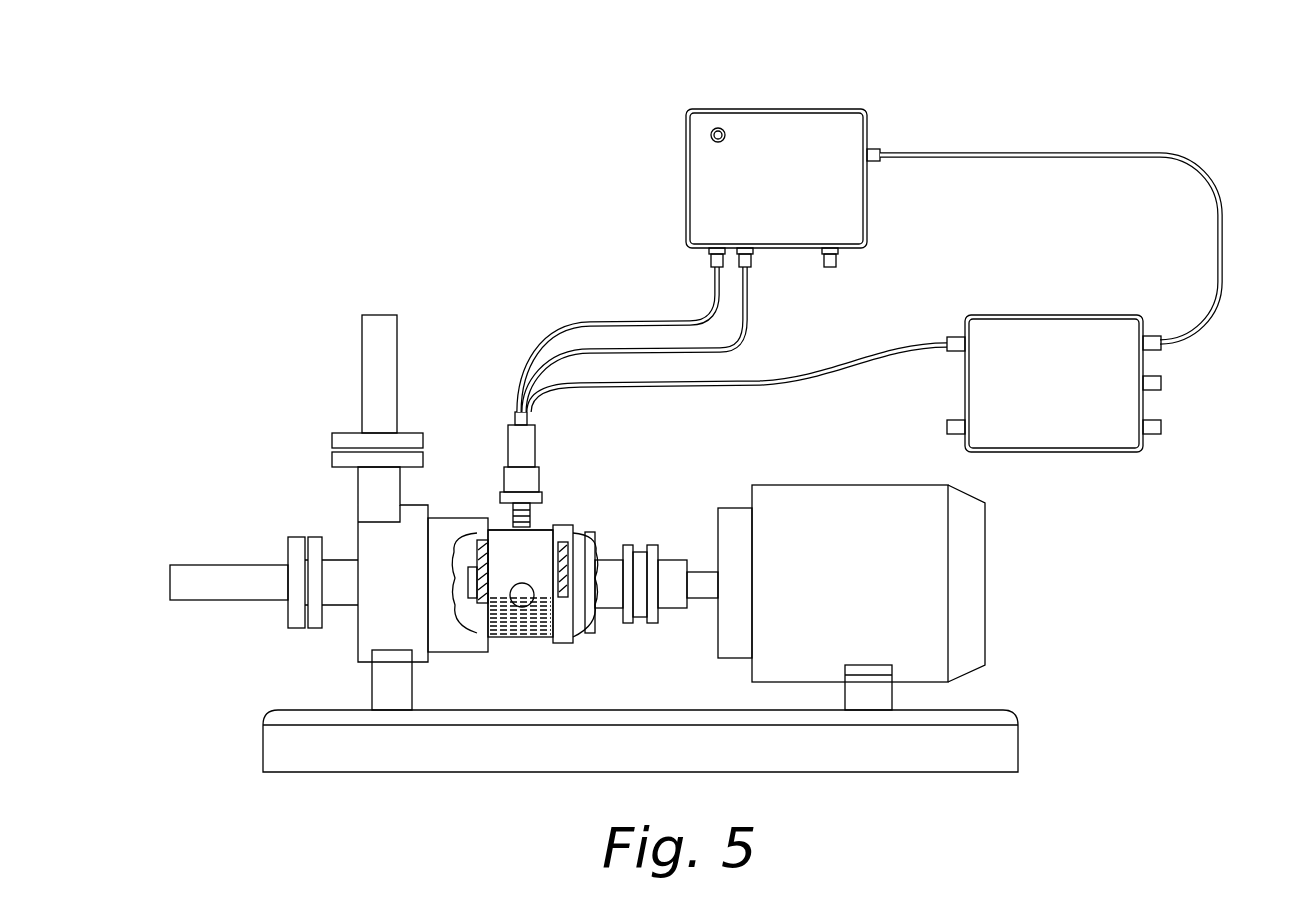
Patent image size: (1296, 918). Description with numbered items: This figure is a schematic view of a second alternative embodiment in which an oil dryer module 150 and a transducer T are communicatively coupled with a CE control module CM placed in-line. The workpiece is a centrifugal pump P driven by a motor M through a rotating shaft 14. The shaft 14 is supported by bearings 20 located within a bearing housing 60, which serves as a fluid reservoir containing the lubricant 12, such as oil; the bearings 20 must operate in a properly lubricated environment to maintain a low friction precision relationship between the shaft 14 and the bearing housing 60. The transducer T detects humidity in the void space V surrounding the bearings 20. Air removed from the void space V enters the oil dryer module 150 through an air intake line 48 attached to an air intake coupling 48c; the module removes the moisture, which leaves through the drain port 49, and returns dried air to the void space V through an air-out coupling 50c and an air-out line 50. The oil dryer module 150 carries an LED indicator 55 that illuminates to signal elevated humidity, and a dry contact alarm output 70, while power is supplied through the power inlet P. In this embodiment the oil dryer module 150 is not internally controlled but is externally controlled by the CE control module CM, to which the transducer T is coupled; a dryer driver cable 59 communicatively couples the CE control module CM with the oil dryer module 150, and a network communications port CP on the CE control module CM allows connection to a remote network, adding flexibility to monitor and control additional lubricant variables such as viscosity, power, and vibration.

The lubricant 12 is at (527, 632).
The shaft 14 is at (708, 592).
The bearings 20 is at (480, 535).
The air intake line 48 is at (590, 320).
The air intake coupling 48c is at (710, 268).
The drain port 49 is at (830, 267).
The air-out line 50 is at (685, 355).
The air-out coupling 50c is at (755, 268).
The LED indicator 55 is at (728, 131).
The dryer driver cable 59 is at (1065, 150).
The bearing housing 60 is at (535, 548).
The dry contact alarm output 70 is at (1165, 430).
The oil dryer module 150 is at (700, 175).
The transducer T is at (530, 453).
The void space V is at (497, 525).
The motor M is at (987, 590).
The centrifugal pump P is at (365, 640).
The CE control module CM is at (965, 388).
The network communications port CP is at (1165, 384).